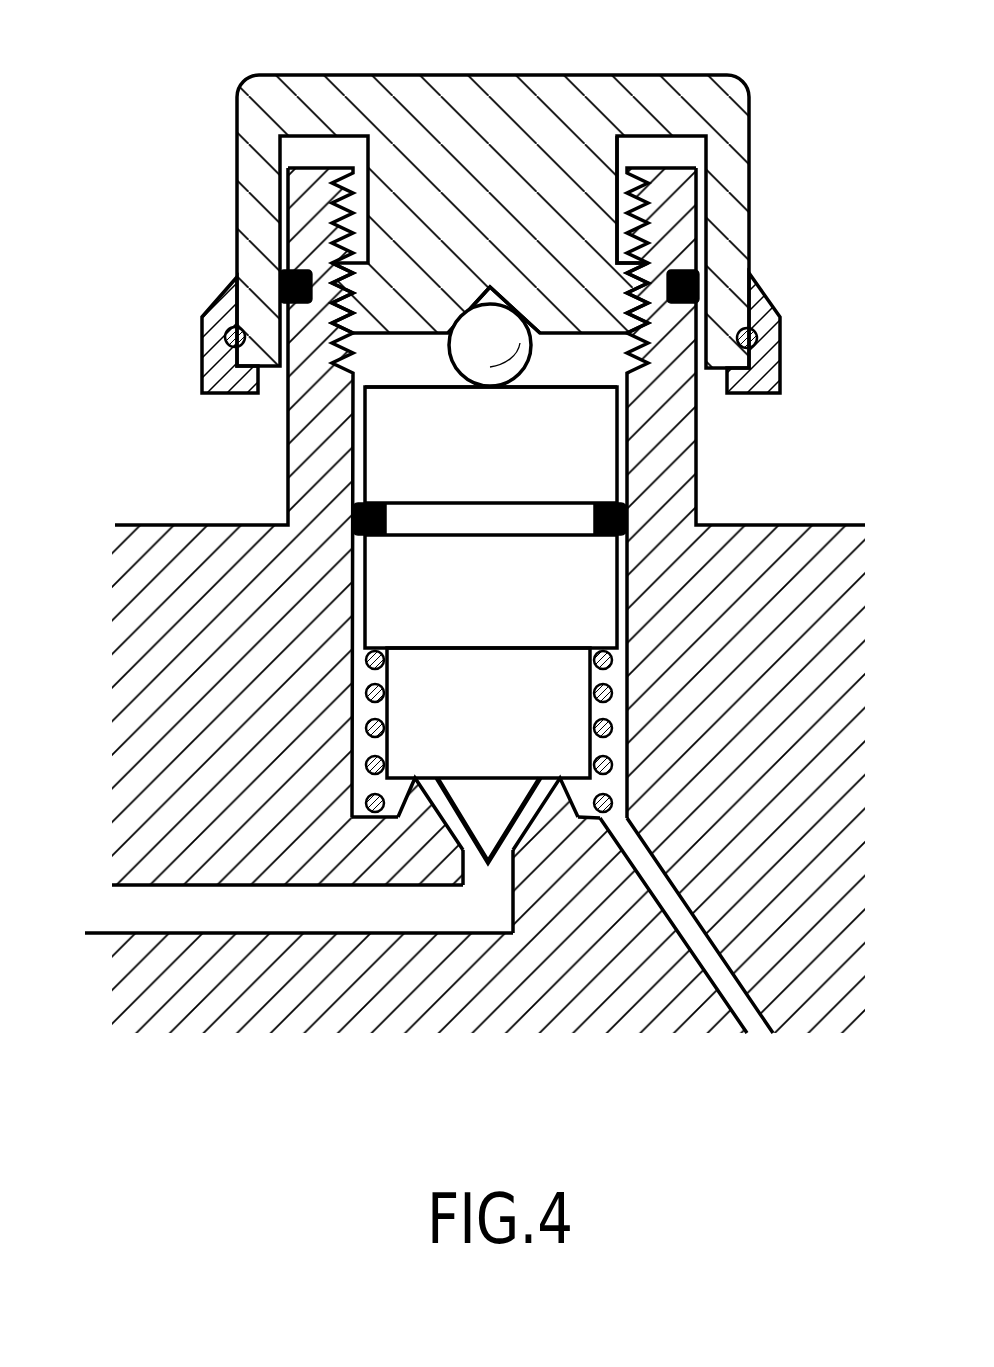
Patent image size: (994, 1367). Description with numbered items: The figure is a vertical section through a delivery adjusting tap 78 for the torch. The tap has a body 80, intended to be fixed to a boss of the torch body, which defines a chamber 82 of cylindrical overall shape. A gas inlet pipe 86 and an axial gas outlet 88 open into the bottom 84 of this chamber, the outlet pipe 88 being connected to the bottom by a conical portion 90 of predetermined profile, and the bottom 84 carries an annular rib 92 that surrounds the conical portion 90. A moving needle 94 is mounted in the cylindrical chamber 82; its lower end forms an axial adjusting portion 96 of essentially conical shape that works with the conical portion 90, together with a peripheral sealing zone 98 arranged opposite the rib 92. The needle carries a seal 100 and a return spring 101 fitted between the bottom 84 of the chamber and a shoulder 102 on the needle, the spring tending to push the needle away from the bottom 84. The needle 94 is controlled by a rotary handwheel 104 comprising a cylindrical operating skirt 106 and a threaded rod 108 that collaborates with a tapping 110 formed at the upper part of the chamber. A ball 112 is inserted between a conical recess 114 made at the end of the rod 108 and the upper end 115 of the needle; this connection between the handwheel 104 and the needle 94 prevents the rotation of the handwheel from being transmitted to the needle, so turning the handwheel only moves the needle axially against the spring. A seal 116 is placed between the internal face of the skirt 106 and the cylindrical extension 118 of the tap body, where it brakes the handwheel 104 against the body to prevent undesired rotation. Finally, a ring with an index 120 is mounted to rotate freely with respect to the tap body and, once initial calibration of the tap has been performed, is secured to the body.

The adjusting tap 78 is at (172, 100).
The body 80 is at (180, 788).
The chamber 82 is at (357, 677).
The bottom 84 is at (357, 797).
The gas inlet pipe 86 is at (703, 970).
The axial gas outlet 88 is at (280, 912).
The conical portion 90 is at (447, 818).
The annular rib 92 is at (557, 803).
The moving needle 94 is at (583, 600).
The axial adjusting portion 96 is at (485, 818).
The peripheral sealing zone 98 is at (398, 773).
The seal 100 is at (603, 497).
The return spring 101 is at (608, 690).
The shoulder 102 is at (487, 660).
The rotary handwheel 104 is at (750, 152).
The cylindrical operating skirt 106 is at (235, 258).
The threaded rod 108 is at (542, 125).
The tapping 110 is at (353, 295).
The ball 112 is at (513, 343).
The conical recess 114 is at (507, 292).
The upper end 115 is at (433, 392).
The seal 116 is at (710, 275).
The cylindrical extension 118 is at (690, 228).
The ring with an index 120 is at (785, 353).